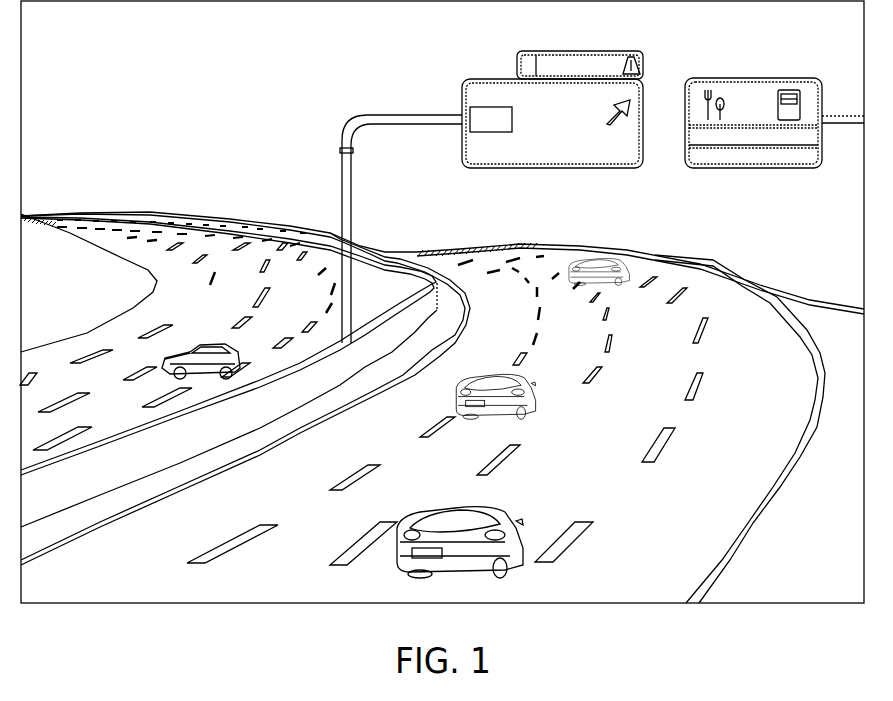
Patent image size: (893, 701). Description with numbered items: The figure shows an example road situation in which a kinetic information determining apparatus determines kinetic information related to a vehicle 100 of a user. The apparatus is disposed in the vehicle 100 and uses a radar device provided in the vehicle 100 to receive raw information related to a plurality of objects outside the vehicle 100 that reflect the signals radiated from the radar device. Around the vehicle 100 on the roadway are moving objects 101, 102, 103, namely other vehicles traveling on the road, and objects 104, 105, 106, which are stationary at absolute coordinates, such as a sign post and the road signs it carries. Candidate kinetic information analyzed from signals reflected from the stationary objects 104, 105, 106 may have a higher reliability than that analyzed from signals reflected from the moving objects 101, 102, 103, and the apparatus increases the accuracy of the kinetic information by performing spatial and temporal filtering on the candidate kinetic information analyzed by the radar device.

The vehicle 100 is at (505, 512).
The moving object 101 is at (203, 345).
The moving object 102 is at (550, 399).
The moving object 103 is at (606, 258).
The stationary object 104 is at (345, 180).
The stationary object 105 is at (483, 78).
The stationary object 106 is at (753, 78).